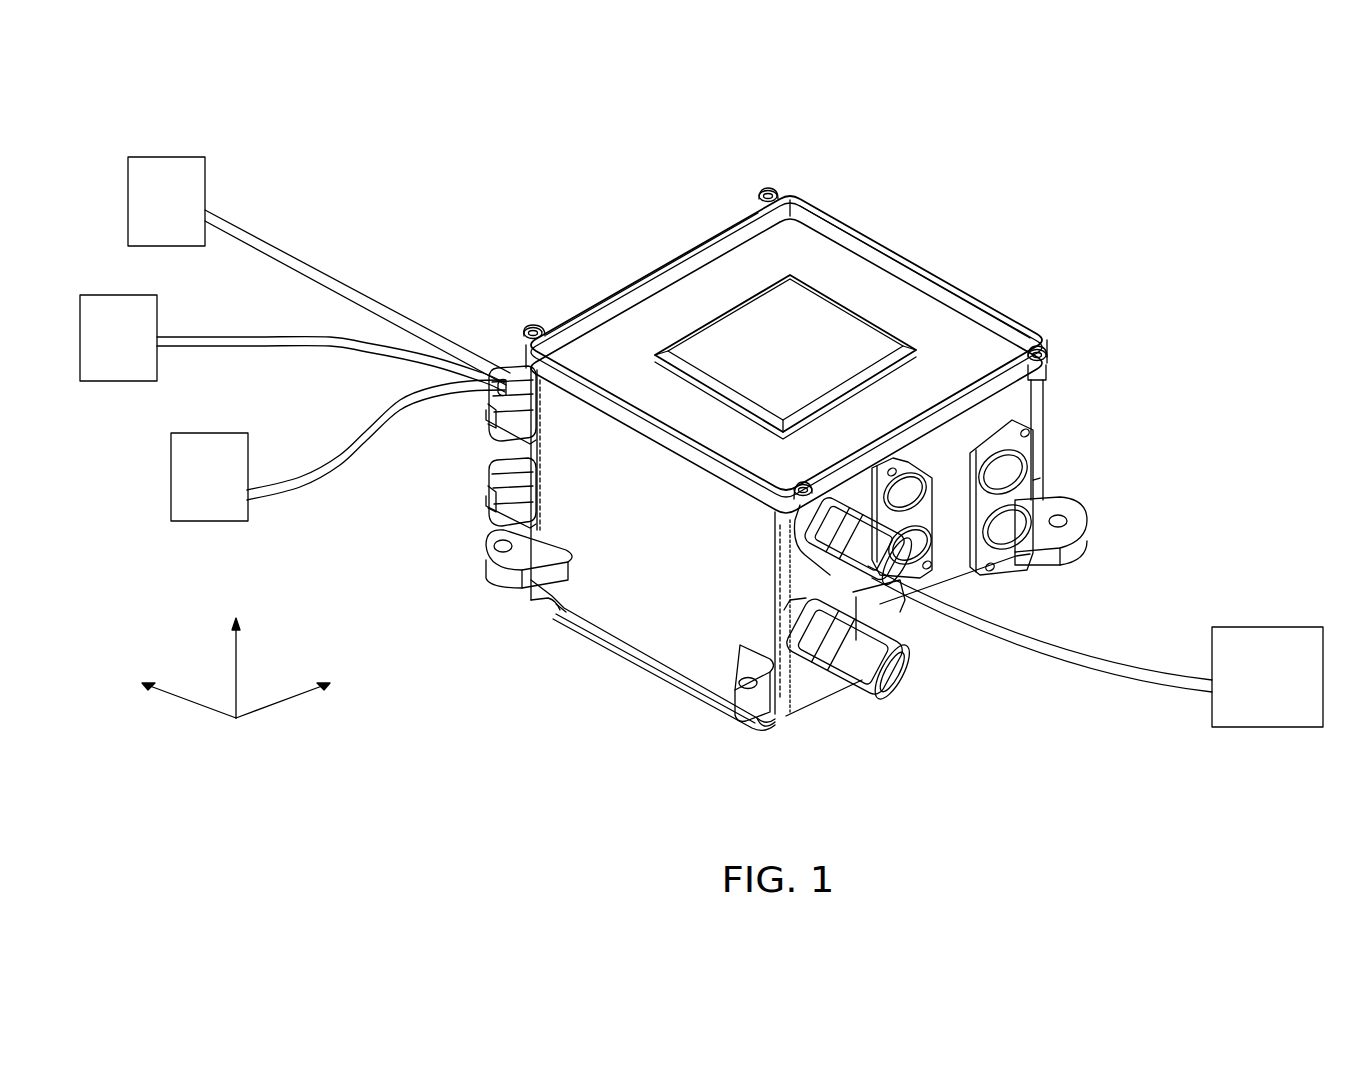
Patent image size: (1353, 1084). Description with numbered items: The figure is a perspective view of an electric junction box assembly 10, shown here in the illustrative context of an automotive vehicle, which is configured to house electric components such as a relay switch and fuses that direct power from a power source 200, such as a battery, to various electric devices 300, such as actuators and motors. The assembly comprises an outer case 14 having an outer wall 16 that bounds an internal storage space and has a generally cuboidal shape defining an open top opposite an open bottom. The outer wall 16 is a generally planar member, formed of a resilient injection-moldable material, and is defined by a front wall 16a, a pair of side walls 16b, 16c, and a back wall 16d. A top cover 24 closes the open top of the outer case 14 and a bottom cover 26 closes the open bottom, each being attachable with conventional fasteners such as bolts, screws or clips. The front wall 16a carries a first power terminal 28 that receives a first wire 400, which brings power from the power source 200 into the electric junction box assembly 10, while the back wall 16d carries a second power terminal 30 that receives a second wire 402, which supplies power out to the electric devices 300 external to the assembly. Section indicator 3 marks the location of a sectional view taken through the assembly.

The electric junction box assembly 10 is at (982, 158).
The outer case 14 is at (615, 608).
The outer wall 16 is at (650, 637).
The front wall 16a is at (1022, 404).
The side wall 16b is at (707, 658).
The side wall 16c is at (953, 276).
The back wall 16d is at (699, 242).
The top cover 24 is at (846, 285).
The bottom cover 26 is at (546, 620).
The first power terminal 28 is at (952, 566).
The second power terminal 30 is at (490, 427).
The power source 200 is at (1244, 686).
The electric devices 300 is at (145, 215).
The first wire 400 is at (1112, 660).
The second wire 402 is at (443, 313).
The section line for FIG. 3 is at (977, 287).